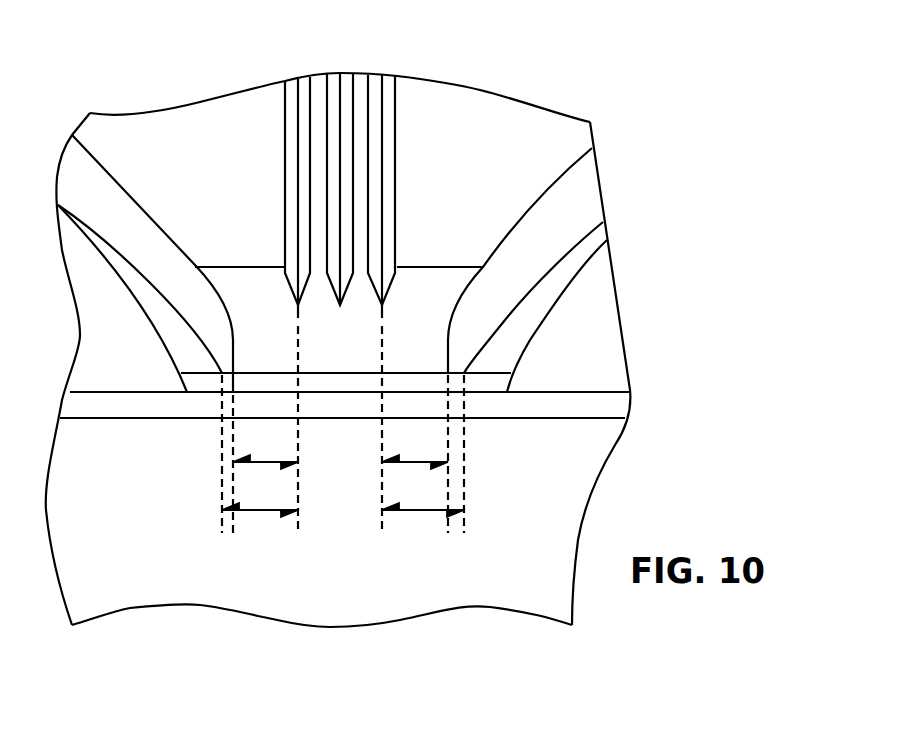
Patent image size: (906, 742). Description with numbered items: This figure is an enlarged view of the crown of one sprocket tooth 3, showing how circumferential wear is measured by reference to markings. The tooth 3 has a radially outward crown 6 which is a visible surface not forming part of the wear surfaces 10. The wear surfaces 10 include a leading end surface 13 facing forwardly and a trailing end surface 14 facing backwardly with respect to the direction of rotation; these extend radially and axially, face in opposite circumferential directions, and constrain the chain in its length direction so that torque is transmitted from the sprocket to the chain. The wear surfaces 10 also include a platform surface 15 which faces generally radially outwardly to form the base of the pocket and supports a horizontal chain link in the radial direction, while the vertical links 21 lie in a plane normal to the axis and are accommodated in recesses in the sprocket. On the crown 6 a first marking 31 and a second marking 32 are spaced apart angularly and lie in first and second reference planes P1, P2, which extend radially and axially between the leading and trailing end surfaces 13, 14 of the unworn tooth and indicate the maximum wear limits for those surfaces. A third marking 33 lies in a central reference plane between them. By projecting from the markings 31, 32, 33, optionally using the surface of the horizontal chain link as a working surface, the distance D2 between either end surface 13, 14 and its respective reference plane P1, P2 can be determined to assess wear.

The tooth 3 is at (548, 120).
The crown 6 is at (443, 156).
The wear surfaces 10 is at (590, 200).
The leading end surface 13 is at (155, 243).
The trailing end surface 14 is at (507, 248).
The platform surface 15 is at (525, 317).
The vertical links 21 is at (141, 523).
The first marking 31 is at (297, 78).
The second marking 32 is at (383, 77).
The third marking 33 is at (340, 75).
The first reference plane P1 is at (294, 428).
The second reference plane P2 is at (415, 429).
The distance D2 is at (268, 513).